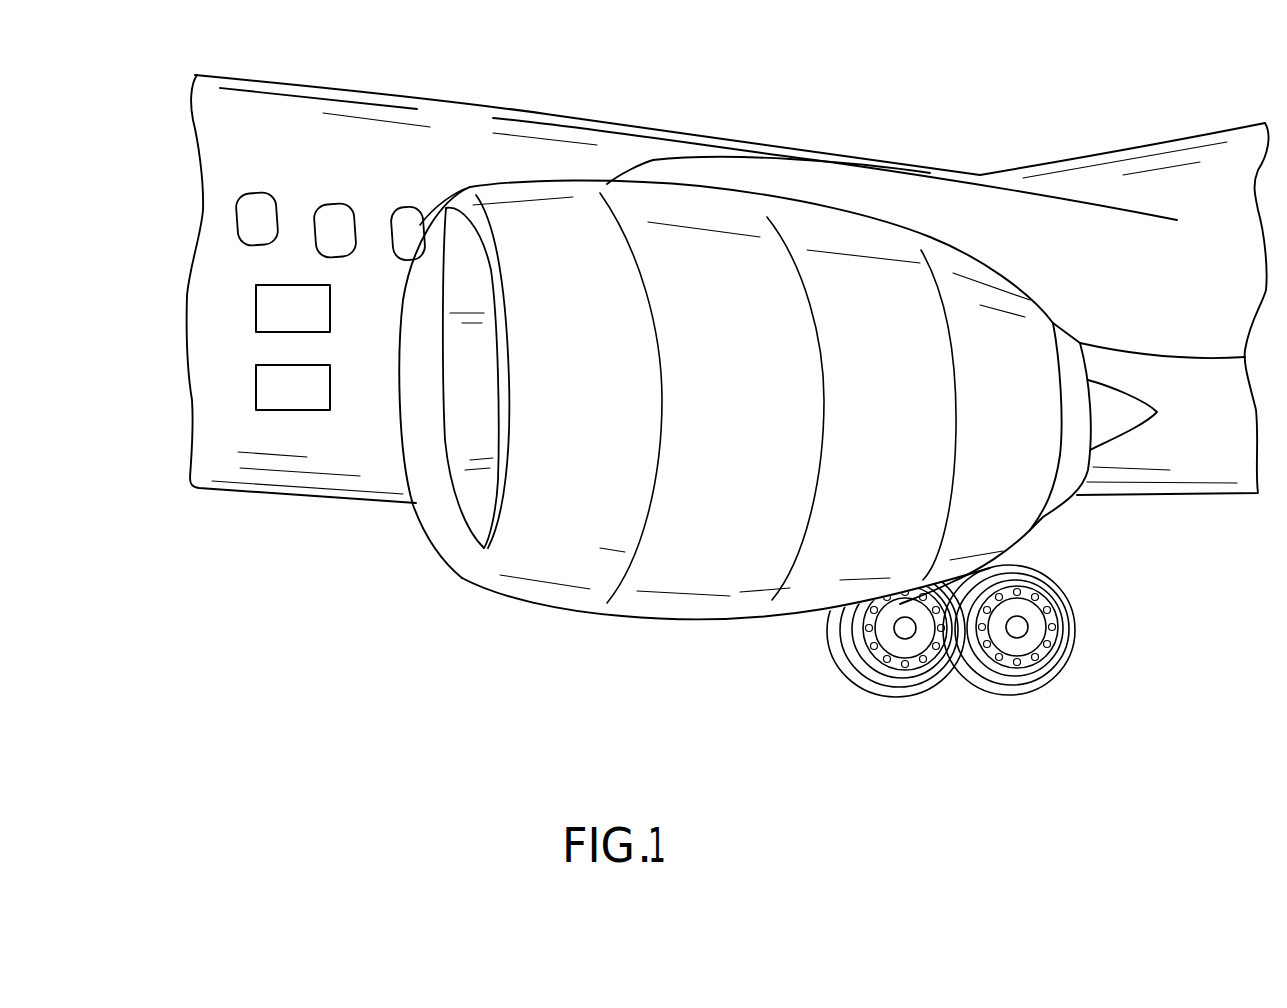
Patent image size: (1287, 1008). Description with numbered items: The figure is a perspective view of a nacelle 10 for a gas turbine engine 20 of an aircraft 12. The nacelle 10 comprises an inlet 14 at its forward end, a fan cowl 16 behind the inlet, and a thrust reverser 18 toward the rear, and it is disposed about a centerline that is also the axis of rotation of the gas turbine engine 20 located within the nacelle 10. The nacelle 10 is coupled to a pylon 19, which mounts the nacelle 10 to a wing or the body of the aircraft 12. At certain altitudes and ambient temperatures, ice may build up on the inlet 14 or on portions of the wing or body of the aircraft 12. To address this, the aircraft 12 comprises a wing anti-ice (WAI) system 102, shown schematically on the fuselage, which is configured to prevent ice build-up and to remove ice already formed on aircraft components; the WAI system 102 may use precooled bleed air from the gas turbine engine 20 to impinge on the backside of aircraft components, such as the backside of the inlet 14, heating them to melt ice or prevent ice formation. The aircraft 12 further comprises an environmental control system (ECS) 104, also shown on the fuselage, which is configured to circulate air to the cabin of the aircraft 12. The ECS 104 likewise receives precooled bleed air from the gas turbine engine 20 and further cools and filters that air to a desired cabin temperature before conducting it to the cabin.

The nacelle 10 is at (623, 610).
The aircraft 12 is at (199, 558).
The inlet 14 is at (448, 501).
The fan cowl 16 is at (700, 190).
The thrust reverser 18 is at (831, 210).
The pylon 19 is at (857, 164).
The gas turbine engine 20 is at (474, 304).
The wing anti-ice (WAI) system 102 is at (330, 390).
The environmental control system (ECS) 104 is at (257, 302).